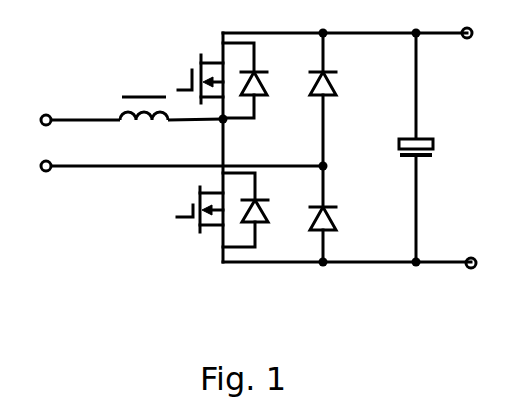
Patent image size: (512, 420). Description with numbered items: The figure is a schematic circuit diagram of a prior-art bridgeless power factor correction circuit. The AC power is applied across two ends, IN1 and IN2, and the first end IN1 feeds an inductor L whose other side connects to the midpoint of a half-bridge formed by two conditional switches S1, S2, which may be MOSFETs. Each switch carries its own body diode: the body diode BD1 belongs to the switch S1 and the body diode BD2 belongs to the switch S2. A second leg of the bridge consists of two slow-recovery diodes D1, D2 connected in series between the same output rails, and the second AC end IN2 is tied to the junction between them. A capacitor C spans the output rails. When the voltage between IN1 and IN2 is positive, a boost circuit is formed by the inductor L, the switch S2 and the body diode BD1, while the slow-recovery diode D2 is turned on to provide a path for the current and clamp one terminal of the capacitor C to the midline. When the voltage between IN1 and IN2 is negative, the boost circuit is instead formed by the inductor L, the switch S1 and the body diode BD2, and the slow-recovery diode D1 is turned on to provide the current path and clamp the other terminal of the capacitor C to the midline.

The first end of AC power IN1 is at (61, 121).
The second end of AC power IN2 is at (162, 167).
The inductor L is at (171, 98).
The first switch S1 is at (196, 79).
The second switch S2 is at (195, 209).
The first body diode BD1 is at (261, 80).
The second body diode BD2 is at (263, 210).
The first slow-recovery diode D1 is at (339, 85).
The second slow-recovery diode D2 is at (339, 219).
The capacitor C is at (428, 147).